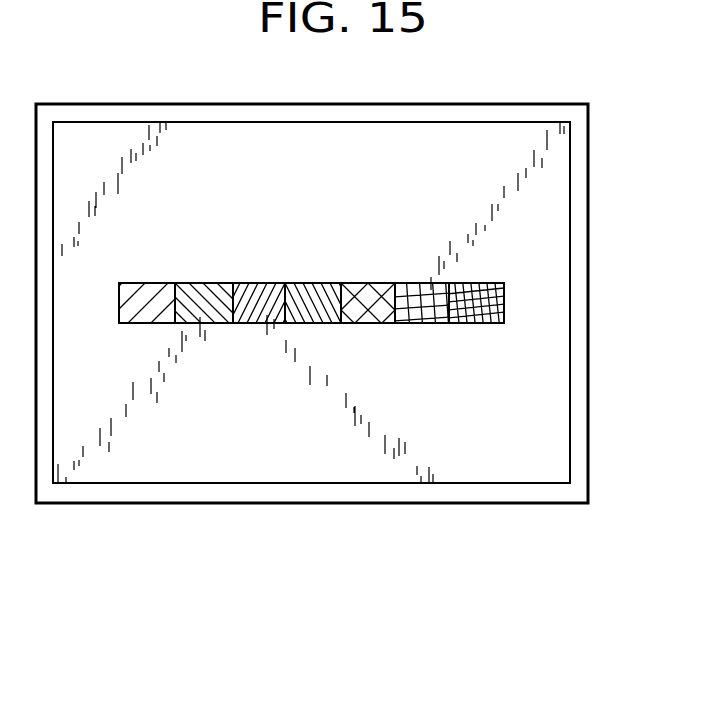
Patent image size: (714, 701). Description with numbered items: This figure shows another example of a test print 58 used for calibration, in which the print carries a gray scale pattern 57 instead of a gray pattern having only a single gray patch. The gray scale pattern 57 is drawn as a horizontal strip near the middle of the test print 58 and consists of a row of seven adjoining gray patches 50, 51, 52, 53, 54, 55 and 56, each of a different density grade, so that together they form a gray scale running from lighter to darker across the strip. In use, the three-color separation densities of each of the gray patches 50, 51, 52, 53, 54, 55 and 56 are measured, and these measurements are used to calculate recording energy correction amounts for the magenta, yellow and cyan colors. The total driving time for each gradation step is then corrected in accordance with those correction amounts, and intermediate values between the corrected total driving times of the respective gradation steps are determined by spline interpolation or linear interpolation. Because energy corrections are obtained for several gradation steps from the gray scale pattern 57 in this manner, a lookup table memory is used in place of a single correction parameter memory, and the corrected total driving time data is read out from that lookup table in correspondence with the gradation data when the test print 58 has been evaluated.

The gray patch 50 is at (150, 283).
The gray patch 51 is at (203, 283).
The gray patch 52 is at (257, 283).
The gray patch 53 is at (315, 283).
The gray patch 54 is at (372, 283).
The gray patch 55 is at (427, 283).
The gray patch 56 is at (484, 283).
The gray scale pattern 57 is at (207, 353).
The test print 58 is at (335, 533).